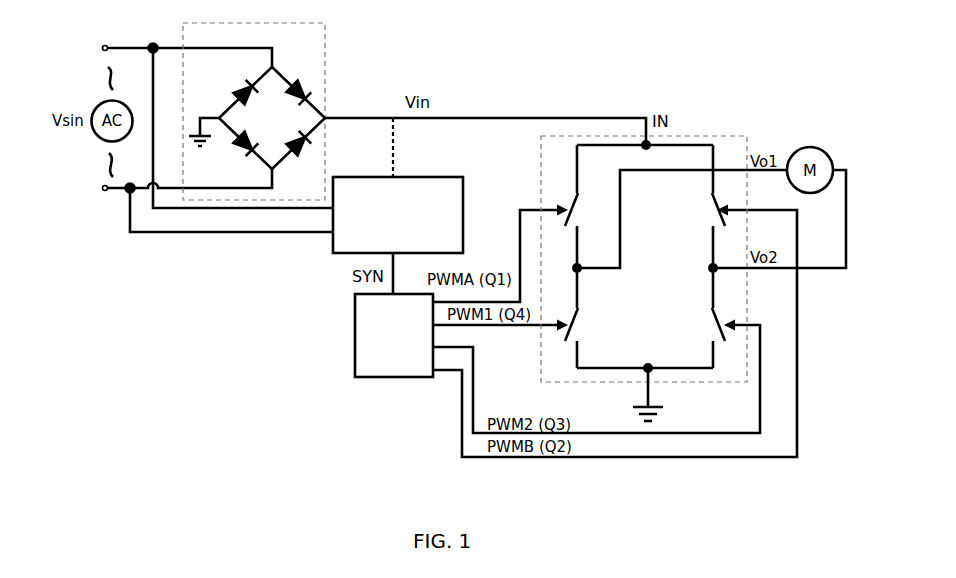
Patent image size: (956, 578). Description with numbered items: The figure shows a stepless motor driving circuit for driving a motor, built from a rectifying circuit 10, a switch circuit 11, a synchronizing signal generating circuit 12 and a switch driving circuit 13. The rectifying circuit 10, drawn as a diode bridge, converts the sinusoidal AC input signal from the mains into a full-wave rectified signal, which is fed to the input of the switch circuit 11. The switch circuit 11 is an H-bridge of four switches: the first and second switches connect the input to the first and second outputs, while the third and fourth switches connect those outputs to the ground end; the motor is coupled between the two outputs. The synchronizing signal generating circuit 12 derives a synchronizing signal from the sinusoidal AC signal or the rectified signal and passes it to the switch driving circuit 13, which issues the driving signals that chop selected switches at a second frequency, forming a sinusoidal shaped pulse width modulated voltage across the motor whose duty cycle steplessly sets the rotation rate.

The rectifying circuit 10 is at (325, 57).
The switch circuit 11 is at (733, 136).
The synchronizing signal generating circuit 12 is at (440, 177).
The switch driving circuit 13 is at (355, 338).